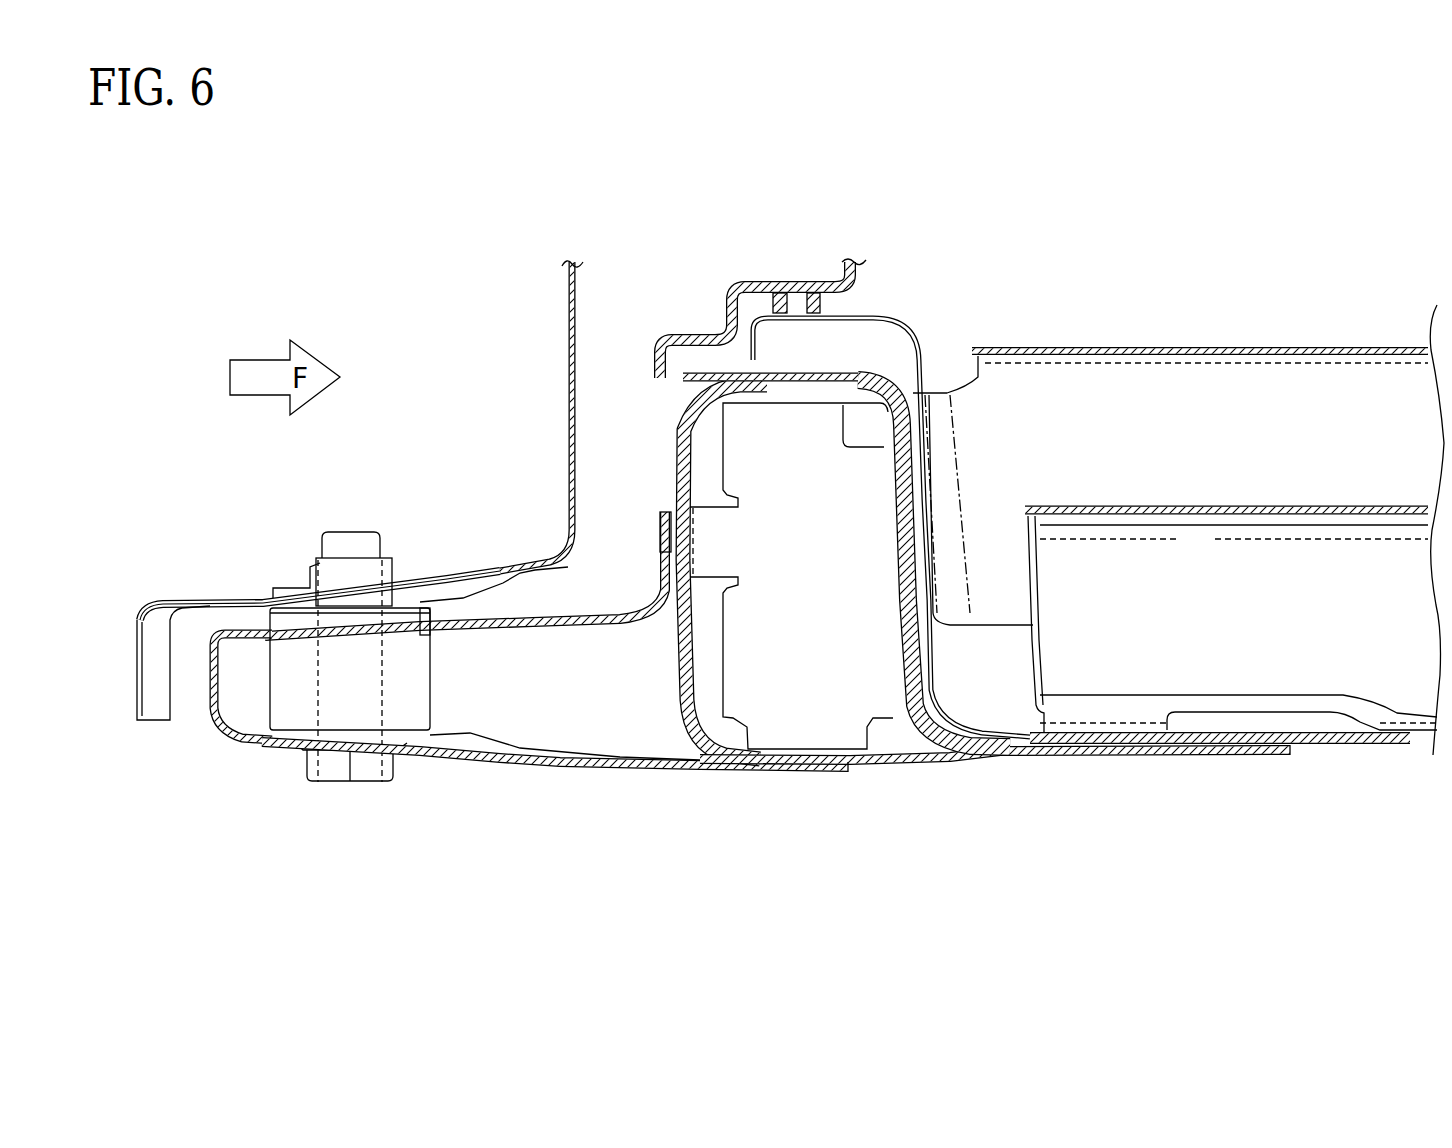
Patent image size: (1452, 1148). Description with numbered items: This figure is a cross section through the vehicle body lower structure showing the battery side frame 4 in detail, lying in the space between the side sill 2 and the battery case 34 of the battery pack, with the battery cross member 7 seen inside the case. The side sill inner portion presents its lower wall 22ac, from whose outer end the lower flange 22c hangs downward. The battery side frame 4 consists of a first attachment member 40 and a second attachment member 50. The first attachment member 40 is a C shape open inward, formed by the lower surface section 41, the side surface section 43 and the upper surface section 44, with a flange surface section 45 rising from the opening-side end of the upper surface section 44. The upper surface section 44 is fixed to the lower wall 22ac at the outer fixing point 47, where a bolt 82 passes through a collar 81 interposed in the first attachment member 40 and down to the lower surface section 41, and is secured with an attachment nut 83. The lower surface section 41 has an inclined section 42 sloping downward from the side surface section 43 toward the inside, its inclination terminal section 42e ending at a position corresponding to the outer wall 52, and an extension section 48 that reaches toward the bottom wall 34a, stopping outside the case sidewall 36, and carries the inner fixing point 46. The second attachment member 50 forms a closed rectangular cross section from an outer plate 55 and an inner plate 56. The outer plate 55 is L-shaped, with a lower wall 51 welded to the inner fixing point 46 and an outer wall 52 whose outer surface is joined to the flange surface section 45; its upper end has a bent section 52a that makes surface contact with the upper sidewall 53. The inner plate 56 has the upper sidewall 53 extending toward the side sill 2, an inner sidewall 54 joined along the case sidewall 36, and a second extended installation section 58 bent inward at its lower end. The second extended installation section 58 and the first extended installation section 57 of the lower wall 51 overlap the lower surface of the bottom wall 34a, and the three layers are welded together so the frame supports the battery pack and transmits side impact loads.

The side sill 2 is at (556, 377).
The battery side frame 4 is at (702, 886).
The battery cross member 7 is at (1365, 498).
The lower wall 22ac is at (240, 600).
The lower flange 22c is at (122, 697).
The battery case 34 is at (1422, 751).
The bottom wall 34a is at (1116, 745).
The case sidewall 36 is at (920, 567).
The first attachment member 40 is at (628, 785).
The lower surface section 41 is at (612, 768).
The inclined section 42 is at (433, 748).
The inclination terminal section 42e is at (692, 771).
The side surface section 43 is at (213, 680).
The upper surface section 44 is at (462, 622).
The flange surface section 45 is at (662, 546).
The inner fixing point 46 is at (797, 770).
The outer fixing point 47 is at (353, 620).
The extension section 48 is at (740, 772).
The second attachment member 50 is at (664, 708).
The lower wall 51 is at (831, 768).
The outer wall 52 is at (676, 500).
The bent section 52a is at (685, 398).
The upper sidewall 53 is at (807, 374).
The inner sidewall 54 is at (900, 460).
The outer plate 55 is at (906, 786).
The inner plate 56 is at (893, 677).
The first extended installation section 57 is at (1180, 742).
The second extended installation section 58 is at (1343, 744).
The collar 81 is at (290, 663).
The bolt 82 is at (337, 668).
The attachment nut 83 is at (289, 587).